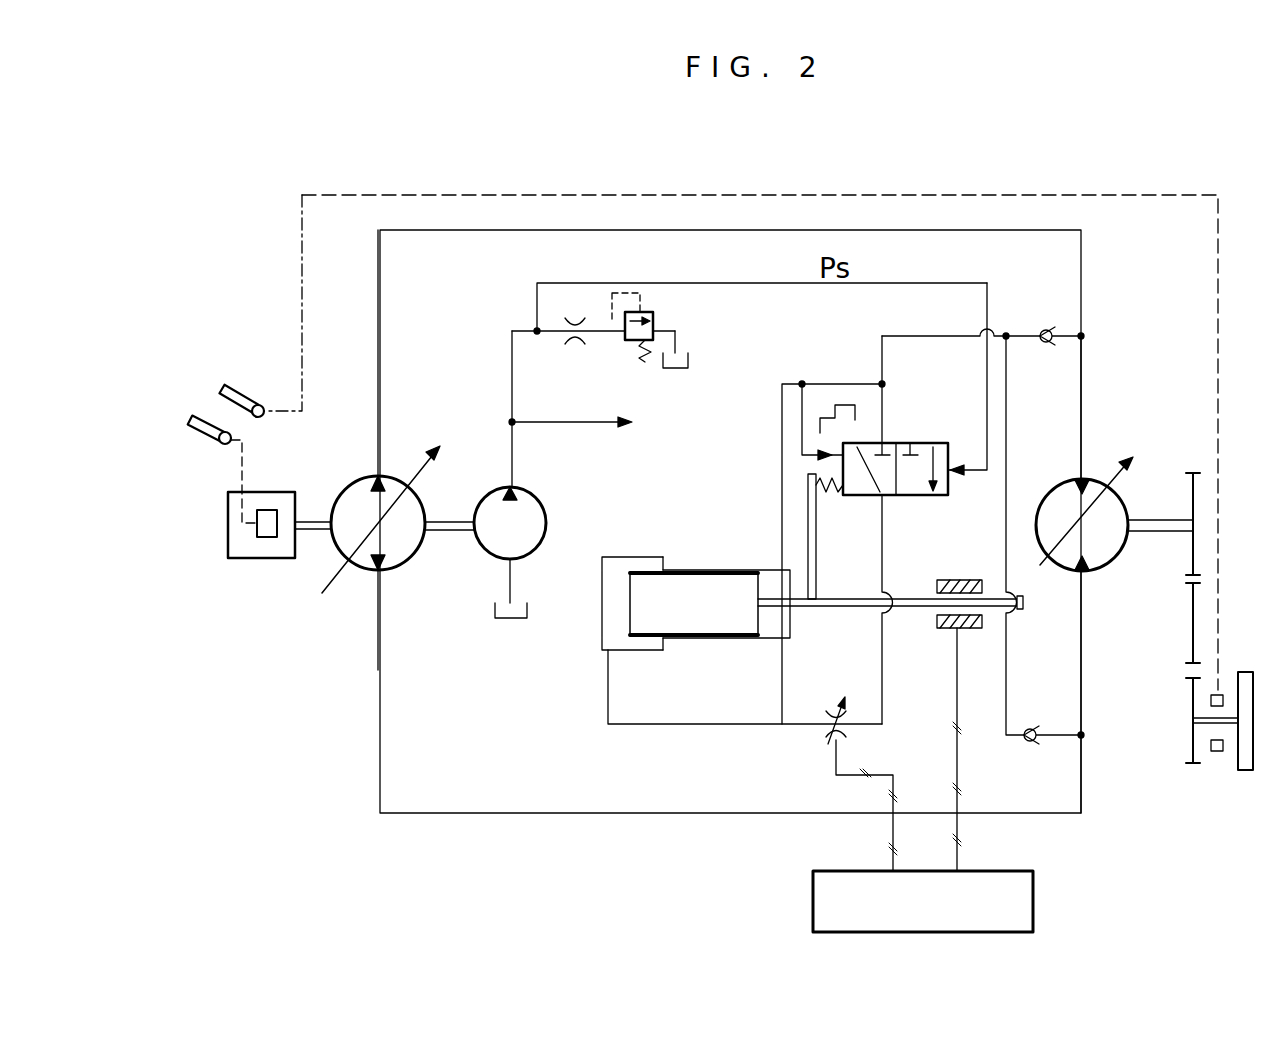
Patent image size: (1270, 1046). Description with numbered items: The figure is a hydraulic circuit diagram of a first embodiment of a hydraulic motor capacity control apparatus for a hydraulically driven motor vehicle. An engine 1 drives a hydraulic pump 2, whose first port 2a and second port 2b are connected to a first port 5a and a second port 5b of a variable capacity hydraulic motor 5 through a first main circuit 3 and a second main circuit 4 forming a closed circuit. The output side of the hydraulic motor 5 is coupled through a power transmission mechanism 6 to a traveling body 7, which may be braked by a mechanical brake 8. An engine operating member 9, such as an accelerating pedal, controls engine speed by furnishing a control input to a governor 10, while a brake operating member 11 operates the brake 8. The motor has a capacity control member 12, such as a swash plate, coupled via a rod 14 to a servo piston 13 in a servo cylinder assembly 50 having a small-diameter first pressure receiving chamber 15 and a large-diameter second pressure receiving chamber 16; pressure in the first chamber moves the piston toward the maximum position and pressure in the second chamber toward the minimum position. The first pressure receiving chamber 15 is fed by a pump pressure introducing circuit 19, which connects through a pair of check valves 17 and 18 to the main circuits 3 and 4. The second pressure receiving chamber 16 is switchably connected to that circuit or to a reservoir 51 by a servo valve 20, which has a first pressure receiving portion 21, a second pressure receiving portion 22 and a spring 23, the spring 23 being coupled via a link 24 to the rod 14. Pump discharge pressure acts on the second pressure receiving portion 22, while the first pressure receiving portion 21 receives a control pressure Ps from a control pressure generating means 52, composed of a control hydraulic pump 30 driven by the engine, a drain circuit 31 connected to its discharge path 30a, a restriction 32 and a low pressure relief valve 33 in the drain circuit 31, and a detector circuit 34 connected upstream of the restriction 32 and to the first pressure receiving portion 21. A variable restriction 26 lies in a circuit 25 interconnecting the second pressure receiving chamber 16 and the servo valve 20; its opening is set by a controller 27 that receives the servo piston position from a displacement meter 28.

The engine 1 is at (292, 497).
The hydraulic pump 2 is at (423, 512).
The first port 2a is at (386, 470).
The second port 2b is at (382, 573).
The first main circuit 3 is at (925, 230).
The second main circuit 4 is at (692, 813).
The hydraulic motor 5 is at (1052, 500).
The first port 5a is at (1096, 478).
The second port 5b is at (1088, 576).
The power transmission mechanism 6 is at (1193, 617).
The traveling body 7 is at (1245, 770).
The mechanical brake 8 is at (1211, 701).
The engine operating member 9 is at (203, 438).
The governor 10 is at (266, 538).
The brake operating member 11 is at (249, 396).
The capacity control member 12 is at (1103, 505).
The servo piston 13 is at (705, 620).
The rod 14 is at (850, 607).
The first pressure receiving chamber 15 is at (782, 623).
The second pressure receiving chamber 16 is at (612, 625).
The check valve 17 is at (1048, 326).
The check valve 18 is at (1034, 744).
The pump pressure introducing circuit 19 is at (882, 348).
The servo valve 20 is at (946, 441).
The first pressure receiving portion 21 is at (960, 478).
The second pressure receiving portion 22 is at (815, 456).
The spring 23 is at (836, 493).
The link 24 is at (808, 508).
The circuit 25 is at (682, 724).
The variable restriction 26 is at (826, 743).
The controller 27 is at (1036, 903).
The displacement meter 28 is at (950, 630).
The control hydraulic pump 30 is at (537, 517).
The discharge path 30a is at (510, 364).
The drain circuit 31 is at (602, 334).
The restriction 32 is at (577, 342).
The low pressure relief valve 33 is at (655, 321).
The detector circuit 34 is at (537, 303).
The servo cylinder assembly 50 is at (696, 555).
The reservoir 51 is at (492, 620).
The control pressure generating means 52 is at (496, 320).